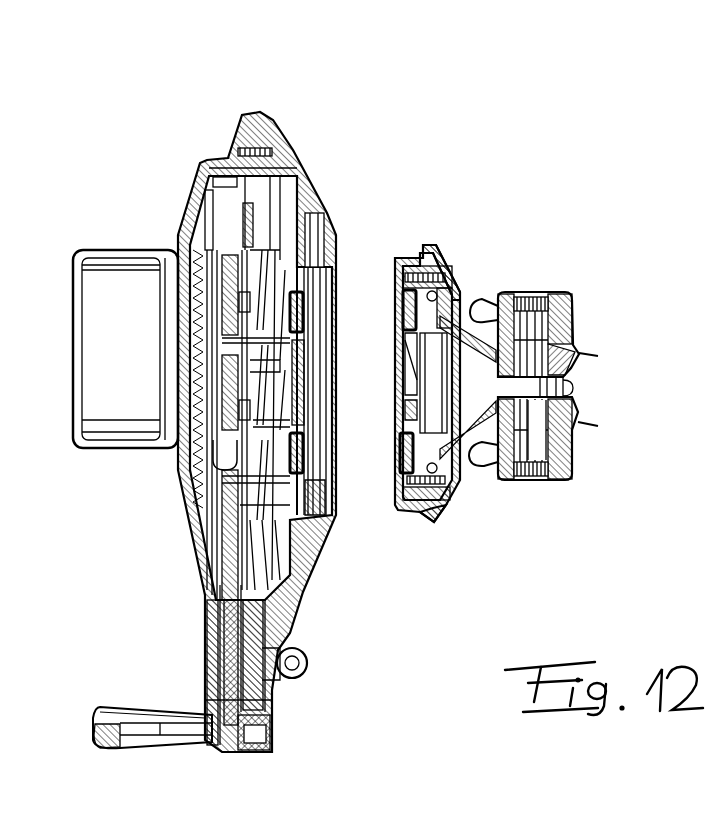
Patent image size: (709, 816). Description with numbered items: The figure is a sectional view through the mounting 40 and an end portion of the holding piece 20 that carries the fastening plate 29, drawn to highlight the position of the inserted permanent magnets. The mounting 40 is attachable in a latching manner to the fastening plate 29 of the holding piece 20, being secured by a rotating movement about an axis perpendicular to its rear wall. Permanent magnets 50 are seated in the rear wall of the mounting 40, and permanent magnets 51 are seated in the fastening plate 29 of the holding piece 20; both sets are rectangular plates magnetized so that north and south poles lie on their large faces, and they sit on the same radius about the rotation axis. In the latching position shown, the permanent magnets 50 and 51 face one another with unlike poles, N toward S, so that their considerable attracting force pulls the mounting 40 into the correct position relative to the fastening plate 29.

The mounting 40 is at (202, 133).
The permanent magnets 50 is at (337, 258).
The permanent magnets 51 is at (443, 257).
The fastening plate 29 is at (417, 530).
The holding piece 20 is at (593, 267).